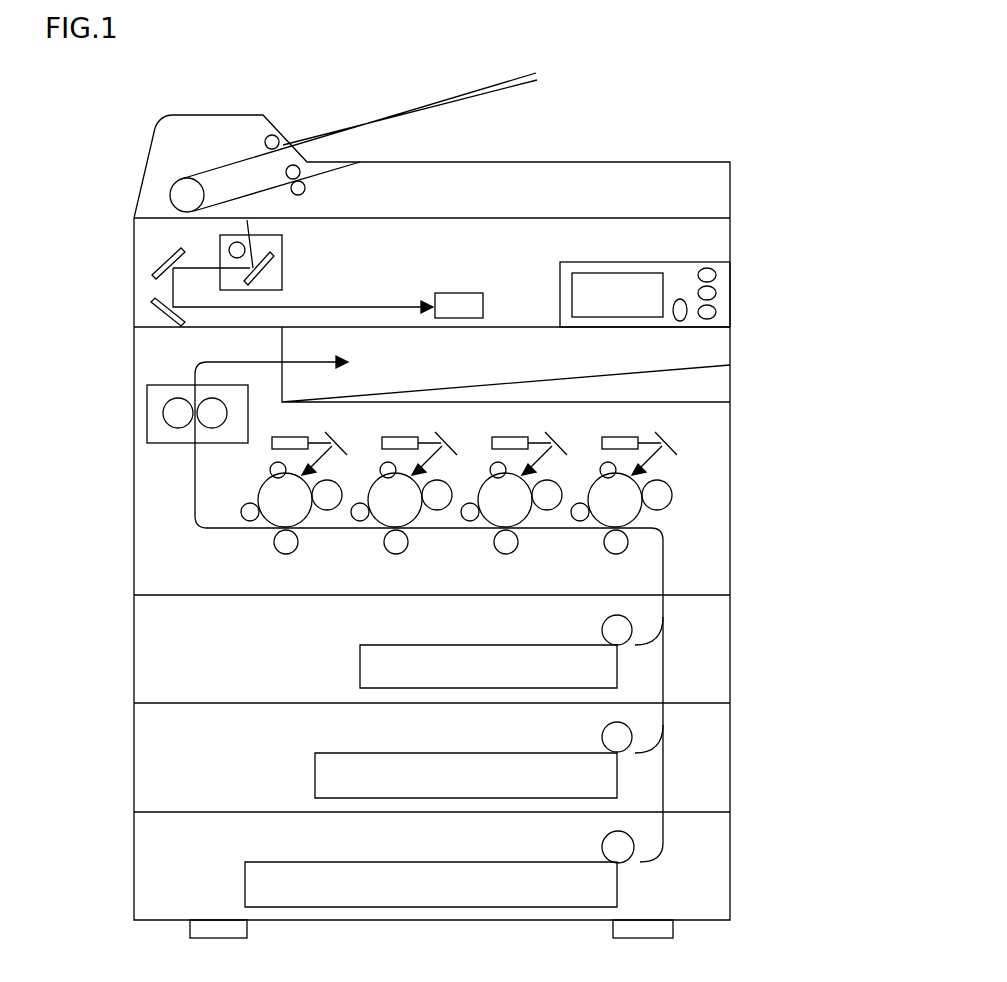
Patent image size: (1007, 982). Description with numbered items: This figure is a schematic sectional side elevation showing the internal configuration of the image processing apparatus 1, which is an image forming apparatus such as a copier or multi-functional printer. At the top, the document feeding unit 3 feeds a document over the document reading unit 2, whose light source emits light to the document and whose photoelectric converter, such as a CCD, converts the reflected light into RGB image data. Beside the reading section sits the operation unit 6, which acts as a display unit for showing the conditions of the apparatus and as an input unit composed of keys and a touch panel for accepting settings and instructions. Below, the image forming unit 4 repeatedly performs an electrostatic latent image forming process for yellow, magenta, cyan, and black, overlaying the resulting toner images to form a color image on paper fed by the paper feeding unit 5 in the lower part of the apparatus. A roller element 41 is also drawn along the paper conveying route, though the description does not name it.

The image processing apparatus 1 is at (702, 117).
The document reading unit 2 is at (112, 276).
The document feeding unit 3 is at (740, 185).
The image forming unit 4 is at (677, 427).
The sheet conveying roller pair 41 is at (145, 394).
The paper feeding unit 5 is at (740, 605).
The operation unit 6 is at (742, 284).